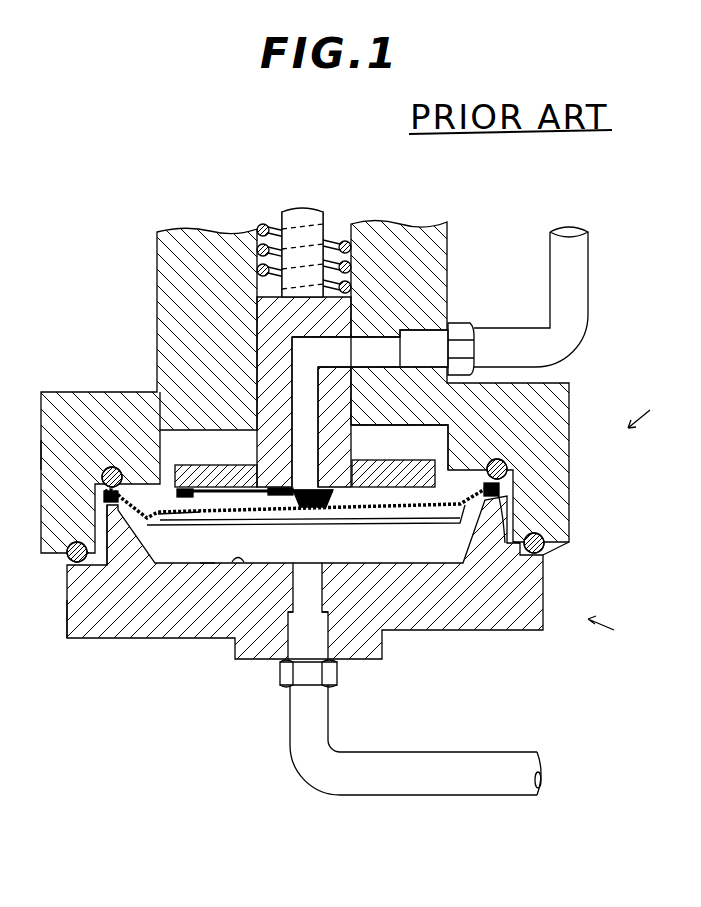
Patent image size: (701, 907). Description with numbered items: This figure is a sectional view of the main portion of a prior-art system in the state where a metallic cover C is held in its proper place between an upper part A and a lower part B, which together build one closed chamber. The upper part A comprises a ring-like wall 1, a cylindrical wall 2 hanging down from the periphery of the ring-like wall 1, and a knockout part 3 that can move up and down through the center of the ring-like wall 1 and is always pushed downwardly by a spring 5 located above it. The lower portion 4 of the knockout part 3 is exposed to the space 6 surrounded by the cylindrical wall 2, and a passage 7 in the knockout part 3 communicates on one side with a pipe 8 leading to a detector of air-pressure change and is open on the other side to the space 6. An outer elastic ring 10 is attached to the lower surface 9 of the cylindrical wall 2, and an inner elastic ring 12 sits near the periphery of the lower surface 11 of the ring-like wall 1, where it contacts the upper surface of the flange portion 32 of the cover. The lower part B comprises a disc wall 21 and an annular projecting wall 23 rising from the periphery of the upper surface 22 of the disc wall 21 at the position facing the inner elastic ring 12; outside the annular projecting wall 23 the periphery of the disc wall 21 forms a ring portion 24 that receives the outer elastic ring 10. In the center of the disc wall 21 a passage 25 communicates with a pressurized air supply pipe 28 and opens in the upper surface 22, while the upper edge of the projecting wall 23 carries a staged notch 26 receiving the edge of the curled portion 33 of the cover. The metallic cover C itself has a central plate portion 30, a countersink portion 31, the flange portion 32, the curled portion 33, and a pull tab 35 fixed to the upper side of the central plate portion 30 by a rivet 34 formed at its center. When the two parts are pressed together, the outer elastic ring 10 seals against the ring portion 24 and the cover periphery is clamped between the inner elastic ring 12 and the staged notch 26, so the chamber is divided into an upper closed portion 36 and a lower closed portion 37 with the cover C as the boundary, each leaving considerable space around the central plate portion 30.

The ring-like wall 1 is at (552, 397).
The cylindrical wall 2 is at (555, 506).
The knockout part 3 is at (257, 327).
The lower portion of knockout part 4 is at (198, 468).
The spring 5 is at (334, 242).
The space 6 is at (97, 513).
The passage 7 is at (345, 345).
The pipe 8 is at (560, 277).
The lower surface of cylindrical wall 9 is at (560, 548).
The outer elastic ring 10 is at (548, 550).
The lower surface of ring-like wall 11 is at (510, 430).
The inner elastic ring 12 is at (510, 466).
The disc wall 21 is at (90, 623).
The upper surface of disc wall 22 is at (238, 565).
The annular projecting wall 23 is at (107, 537).
The ring portion 24 is at (83, 562).
The passage 25 is at (283, 670).
The staged notch 26 is at (80, 467).
The pressurized air supply pipe 28 is at (473, 782).
The central plate portion 30 is at (373, 507).
The countersink portion 31 is at (407, 503).
The flange portion 32 is at (450, 505).
The curled portion 33 is at (497, 500).
The rivet 34 is at (322, 510).
The pull tab 35 is at (335, 600).
The upper closed portion 36 is at (112, 466).
The lower closed portion 37 is at (207, 547).
The upper part A is at (647, 408).
The lower part B is at (609, 632).
The metallic cover C is at (173, 533).